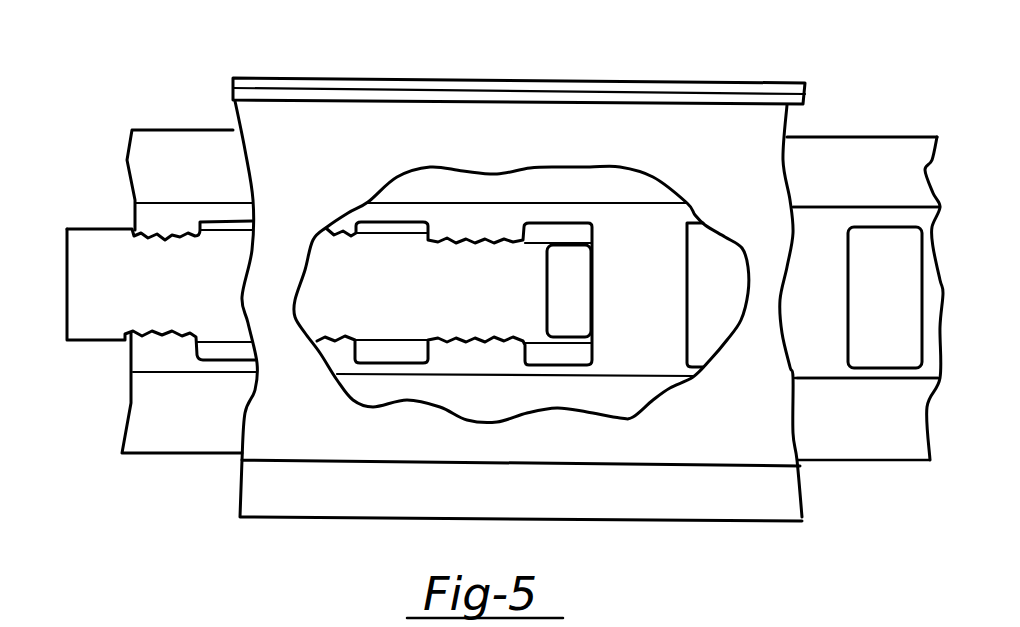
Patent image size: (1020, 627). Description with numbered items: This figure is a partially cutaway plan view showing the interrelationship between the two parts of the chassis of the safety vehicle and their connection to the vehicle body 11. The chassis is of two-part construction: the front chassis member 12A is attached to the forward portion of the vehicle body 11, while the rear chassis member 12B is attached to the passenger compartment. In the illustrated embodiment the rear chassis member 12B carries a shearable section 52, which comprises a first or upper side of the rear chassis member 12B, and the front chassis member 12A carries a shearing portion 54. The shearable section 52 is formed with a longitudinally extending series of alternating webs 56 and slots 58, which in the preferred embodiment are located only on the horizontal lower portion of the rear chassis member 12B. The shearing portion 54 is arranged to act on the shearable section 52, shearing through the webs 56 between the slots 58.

The vehicle body 11 is at (773, 120).
The front chassis member 12A is at (97, 230).
The rear chassis member 12B is at (923, 212).
The shearable section 52 is at (832, 349).
The shearing portion 54 is at (554, 269).
The web 56 is at (615, 220).
The slot 58 is at (690, 207).